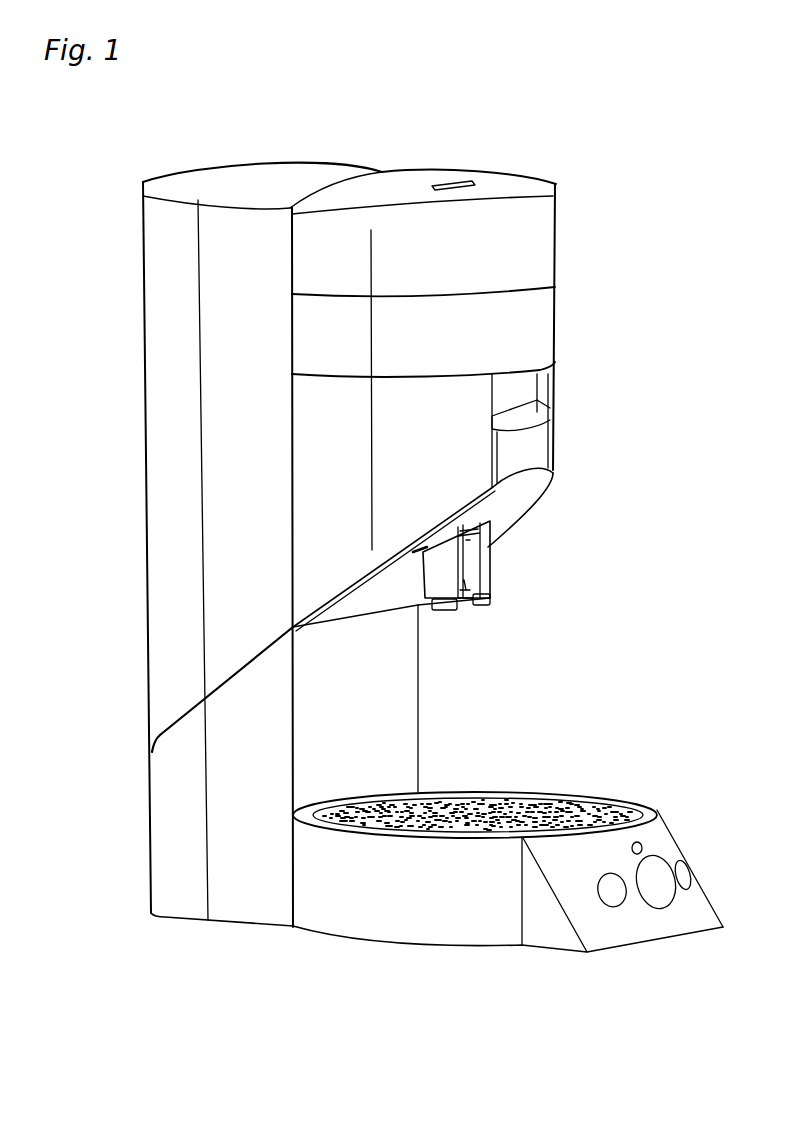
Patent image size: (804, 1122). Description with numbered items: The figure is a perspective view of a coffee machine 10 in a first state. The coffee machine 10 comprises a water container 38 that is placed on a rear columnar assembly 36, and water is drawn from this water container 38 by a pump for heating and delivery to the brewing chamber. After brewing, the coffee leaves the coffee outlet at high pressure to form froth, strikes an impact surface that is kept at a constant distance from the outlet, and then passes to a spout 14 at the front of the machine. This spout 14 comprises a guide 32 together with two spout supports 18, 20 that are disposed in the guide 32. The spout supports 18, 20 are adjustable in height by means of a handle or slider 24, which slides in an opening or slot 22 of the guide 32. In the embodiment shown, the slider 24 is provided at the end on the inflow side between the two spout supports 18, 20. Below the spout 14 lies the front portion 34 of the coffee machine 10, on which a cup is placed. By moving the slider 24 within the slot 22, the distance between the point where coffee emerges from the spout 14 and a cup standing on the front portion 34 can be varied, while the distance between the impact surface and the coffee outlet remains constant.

The coffee machine 10 is at (84, 369).
The spout 14 is at (500, 566).
The spout support 18 is at (437, 612).
The spout support 20 is at (487, 607).
The slot 22 is at (490, 560).
The slider 24 is at (540, 508).
The guide 32 is at (465, 603).
The front portion 34 is at (600, 793).
The rear columnar assembly 36 is at (148, 833).
The water container 38 is at (142, 600).